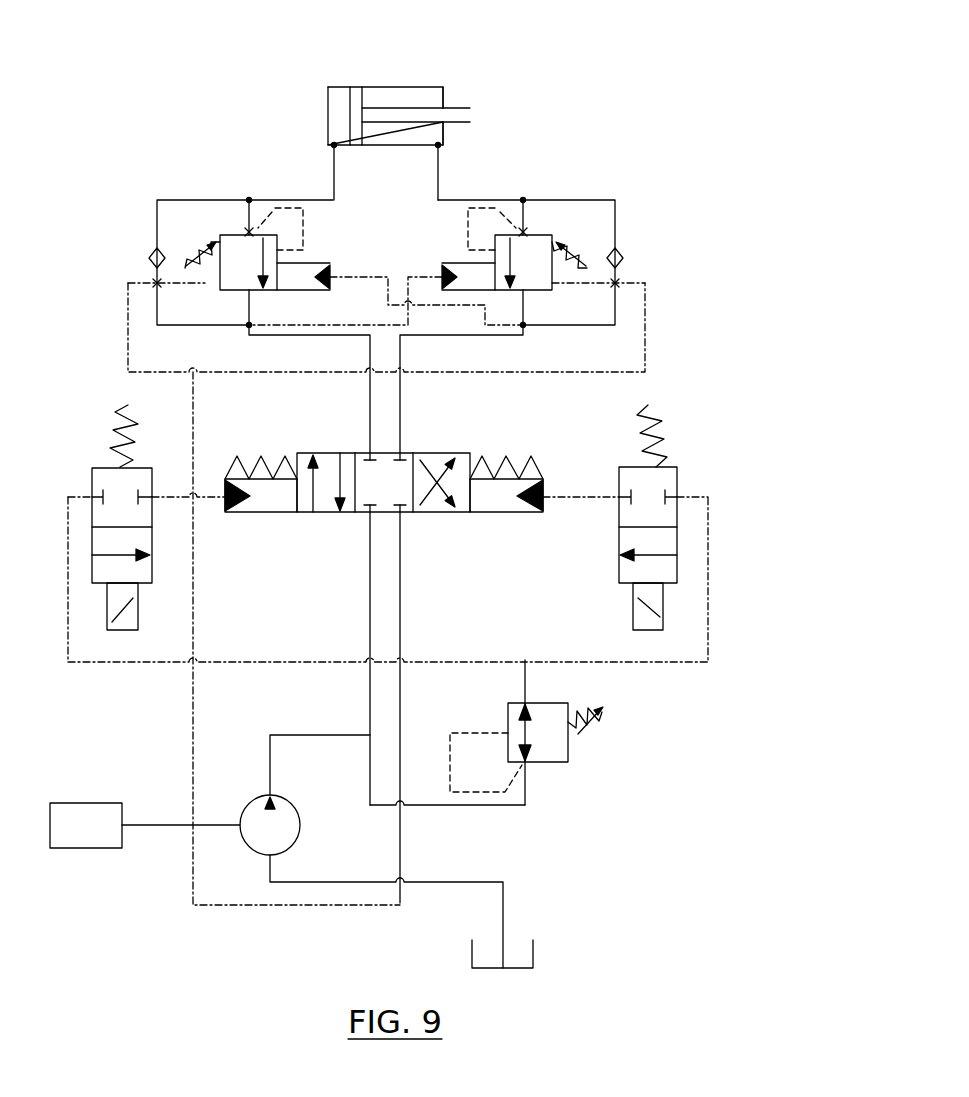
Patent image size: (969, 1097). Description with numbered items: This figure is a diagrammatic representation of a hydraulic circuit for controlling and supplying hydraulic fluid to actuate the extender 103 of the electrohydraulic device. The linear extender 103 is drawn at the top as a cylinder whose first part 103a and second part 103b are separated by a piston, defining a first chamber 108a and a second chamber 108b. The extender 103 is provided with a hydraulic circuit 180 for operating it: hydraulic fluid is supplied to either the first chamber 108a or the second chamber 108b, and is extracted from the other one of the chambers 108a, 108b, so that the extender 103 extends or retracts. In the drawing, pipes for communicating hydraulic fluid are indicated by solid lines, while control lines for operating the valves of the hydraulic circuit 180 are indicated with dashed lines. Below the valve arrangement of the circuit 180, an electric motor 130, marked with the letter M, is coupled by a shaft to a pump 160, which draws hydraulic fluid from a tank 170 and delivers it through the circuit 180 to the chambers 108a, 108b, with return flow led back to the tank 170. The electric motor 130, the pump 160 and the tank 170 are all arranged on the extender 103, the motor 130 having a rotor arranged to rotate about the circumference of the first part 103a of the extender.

The extender 103 is at (412, 87).
The first part of the extender 103a is at (328, 115).
The second part of the extender 103b is at (458, 112).
The first chamber 108a is at (342, 104).
The second chamber 108b is at (440, 133).
The hydraulic circuit 180 is at (636, 161).
The pump 160 is at (300, 830).
The electric motor 130 is at (86, 848).
The tank 170 is at (533, 950).